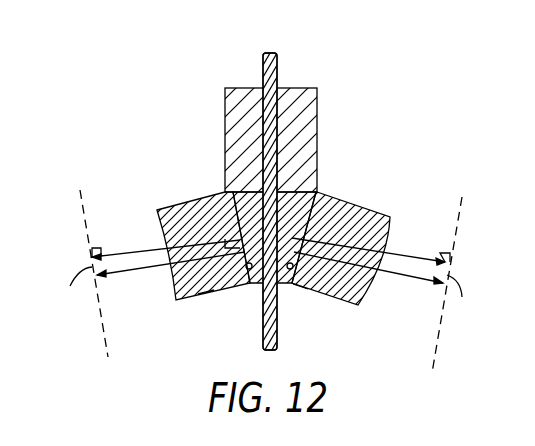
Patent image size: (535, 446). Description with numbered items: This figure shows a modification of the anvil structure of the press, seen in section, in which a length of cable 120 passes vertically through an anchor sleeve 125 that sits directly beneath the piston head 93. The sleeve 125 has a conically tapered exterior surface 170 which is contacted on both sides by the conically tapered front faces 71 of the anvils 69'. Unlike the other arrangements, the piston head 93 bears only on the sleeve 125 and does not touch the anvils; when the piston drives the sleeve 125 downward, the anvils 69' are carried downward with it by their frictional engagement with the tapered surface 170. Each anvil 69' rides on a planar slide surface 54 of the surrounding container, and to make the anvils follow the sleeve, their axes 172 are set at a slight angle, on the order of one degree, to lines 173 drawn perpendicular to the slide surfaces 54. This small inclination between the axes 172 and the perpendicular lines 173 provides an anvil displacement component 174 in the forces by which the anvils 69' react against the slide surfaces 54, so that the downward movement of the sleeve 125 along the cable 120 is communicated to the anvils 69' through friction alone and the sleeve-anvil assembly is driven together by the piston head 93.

The cable 120 is at (281, 68).
The piston head 93 is at (232, 117).
The conically tapered exterior surface 170 is at (233, 212).
The anvils 69' is at (262, 230).
The lines perpendicular to the slide surfaces 173 is at (133, 252).
The anvil axes 172 is at (145, 267).
The anvil displacement component 174 is at (261, 300).
The slide surface 54 is at (107, 350).
The conically tapered front faces 71 is at (207, 290).
The anchor sleeve 125 is at (250, 283).